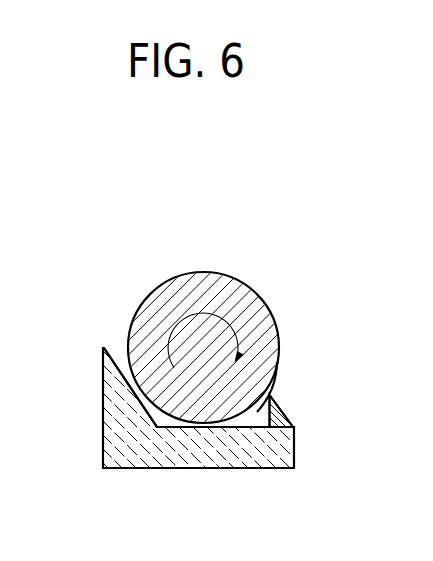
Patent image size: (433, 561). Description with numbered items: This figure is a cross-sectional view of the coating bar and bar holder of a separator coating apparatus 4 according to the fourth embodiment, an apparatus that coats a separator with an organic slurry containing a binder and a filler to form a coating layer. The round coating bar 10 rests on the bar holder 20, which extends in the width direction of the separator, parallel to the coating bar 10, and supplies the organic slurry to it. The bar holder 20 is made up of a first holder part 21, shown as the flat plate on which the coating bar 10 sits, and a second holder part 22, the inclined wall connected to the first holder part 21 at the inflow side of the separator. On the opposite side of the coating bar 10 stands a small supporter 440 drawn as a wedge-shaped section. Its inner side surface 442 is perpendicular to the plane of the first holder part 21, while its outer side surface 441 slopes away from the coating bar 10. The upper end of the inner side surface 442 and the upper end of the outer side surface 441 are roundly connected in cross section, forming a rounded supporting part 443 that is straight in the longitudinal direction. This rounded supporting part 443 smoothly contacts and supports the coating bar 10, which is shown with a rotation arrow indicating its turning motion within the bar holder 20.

The separator coating apparatus 4 is at (207, 182).
The coating bar 10 is at (209, 292).
The bar holder 20 is at (216, 341).
The first holder part 21 is at (218, 453).
The second holder part 22 is at (113, 390).
The supporter 440 is at (311, 417).
The outer side surface 441 is at (283, 407).
The inner side surface 442 is at (277, 386).
The rounded supporting part 443 is at (272, 408).